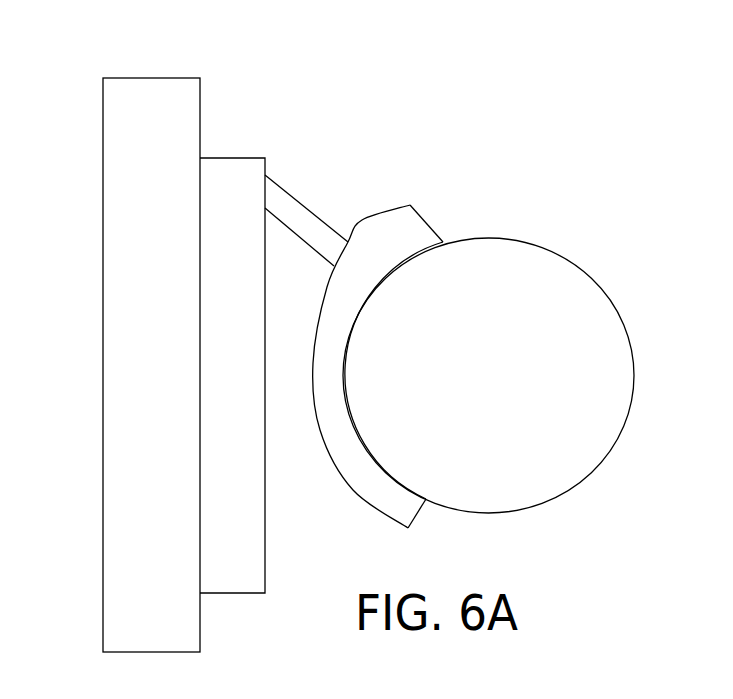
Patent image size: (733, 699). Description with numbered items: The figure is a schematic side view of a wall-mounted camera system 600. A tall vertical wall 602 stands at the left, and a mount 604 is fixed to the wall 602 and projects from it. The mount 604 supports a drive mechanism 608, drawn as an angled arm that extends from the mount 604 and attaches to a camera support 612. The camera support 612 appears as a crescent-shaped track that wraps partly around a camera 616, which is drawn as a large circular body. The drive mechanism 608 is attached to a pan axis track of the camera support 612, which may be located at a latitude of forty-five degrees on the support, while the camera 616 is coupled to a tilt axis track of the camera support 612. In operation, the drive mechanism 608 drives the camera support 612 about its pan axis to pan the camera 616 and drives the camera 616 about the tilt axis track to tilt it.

The wall-mounted camera system 600 is at (453, 26).
The wall 602 is at (135, 77).
The mount 604 is at (232, 155).
The drive mechanism 608 is at (307, 207).
The camera support 612 is at (428, 225).
The camera 616 is at (578, 265).